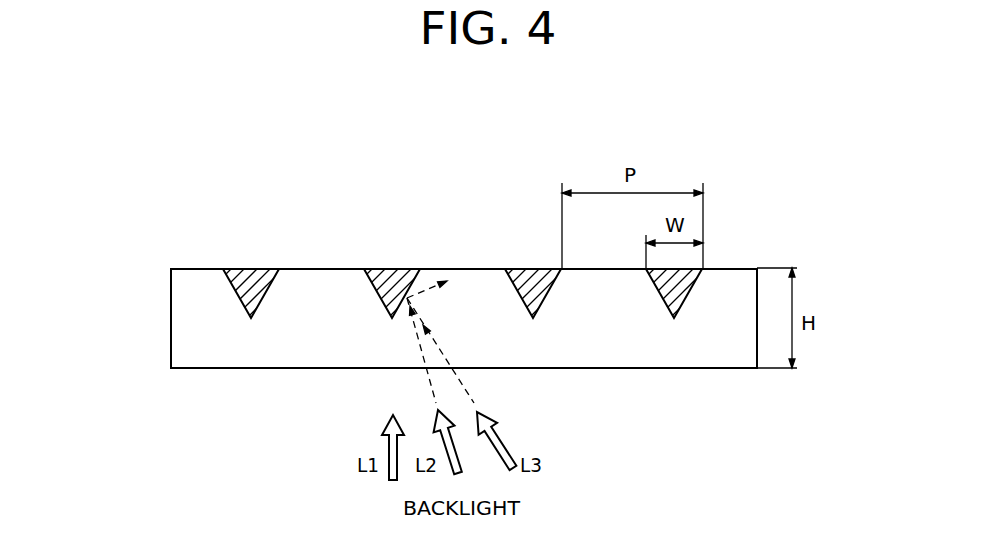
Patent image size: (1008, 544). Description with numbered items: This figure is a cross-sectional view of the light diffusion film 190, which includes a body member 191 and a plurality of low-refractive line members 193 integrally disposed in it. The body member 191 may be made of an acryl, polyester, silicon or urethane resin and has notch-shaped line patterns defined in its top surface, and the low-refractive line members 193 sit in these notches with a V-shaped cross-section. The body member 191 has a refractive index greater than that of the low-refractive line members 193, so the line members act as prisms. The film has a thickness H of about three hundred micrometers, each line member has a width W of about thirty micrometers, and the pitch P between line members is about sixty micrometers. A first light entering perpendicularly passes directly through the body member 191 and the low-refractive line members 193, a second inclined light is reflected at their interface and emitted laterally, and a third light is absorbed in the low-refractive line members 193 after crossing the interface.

The light diffusion film 190 is at (402, 300).
The body member 191 is at (180, 307).
The low-refractive line members 193 is at (248, 277).